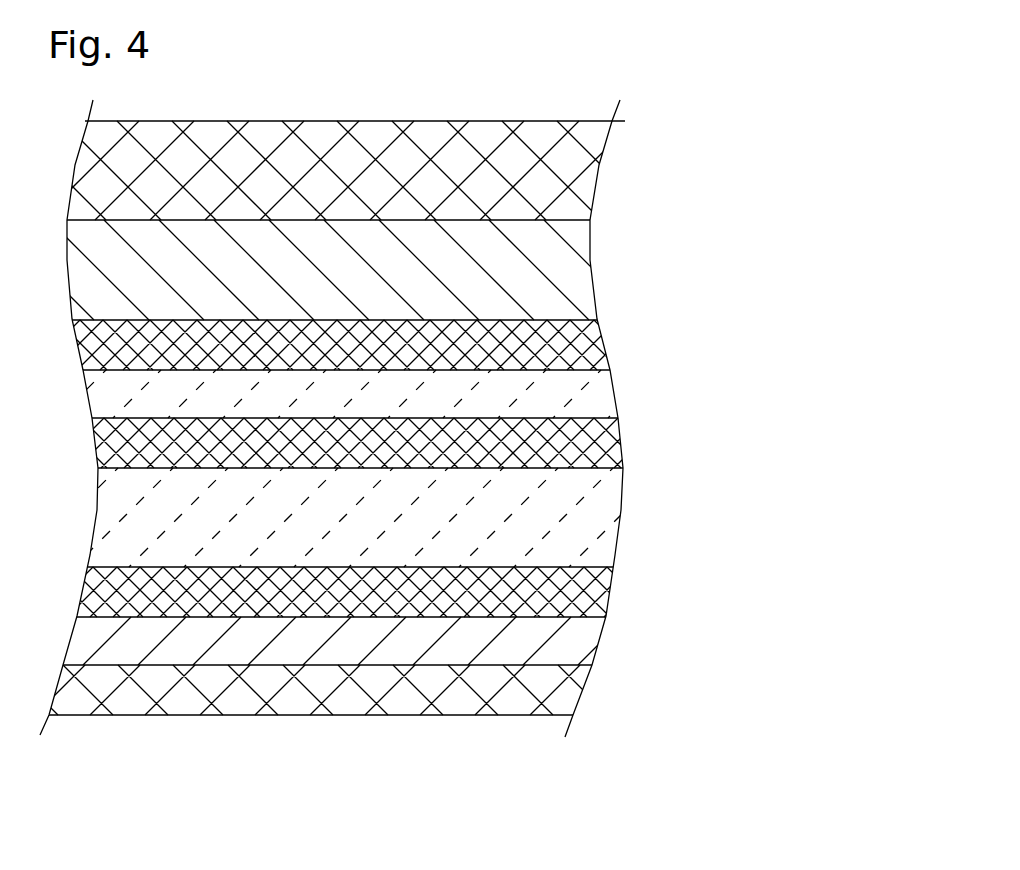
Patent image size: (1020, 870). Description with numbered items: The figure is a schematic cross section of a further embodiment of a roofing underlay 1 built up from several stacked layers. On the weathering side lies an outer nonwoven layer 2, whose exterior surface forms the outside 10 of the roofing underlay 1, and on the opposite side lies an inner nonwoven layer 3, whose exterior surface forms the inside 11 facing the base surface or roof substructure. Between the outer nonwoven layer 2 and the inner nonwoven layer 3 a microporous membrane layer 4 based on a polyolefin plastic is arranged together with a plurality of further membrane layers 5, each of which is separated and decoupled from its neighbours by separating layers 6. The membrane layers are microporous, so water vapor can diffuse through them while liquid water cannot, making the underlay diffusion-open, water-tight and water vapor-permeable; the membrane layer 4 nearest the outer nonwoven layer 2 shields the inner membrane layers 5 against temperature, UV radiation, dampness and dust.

The roofing underlay 1 is at (640, 78).
The outer nonwoven layer 2 is at (560, 180).
The inner nonwoven layer 3 is at (560, 695).
The microporous membrane layer 4 is at (560, 273).
The membrane layer 5 is at (560, 393).
The separating layer 6 is at (560, 343).
The outside 10 is at (423, 120).
The inside 11 is at (470, 715).